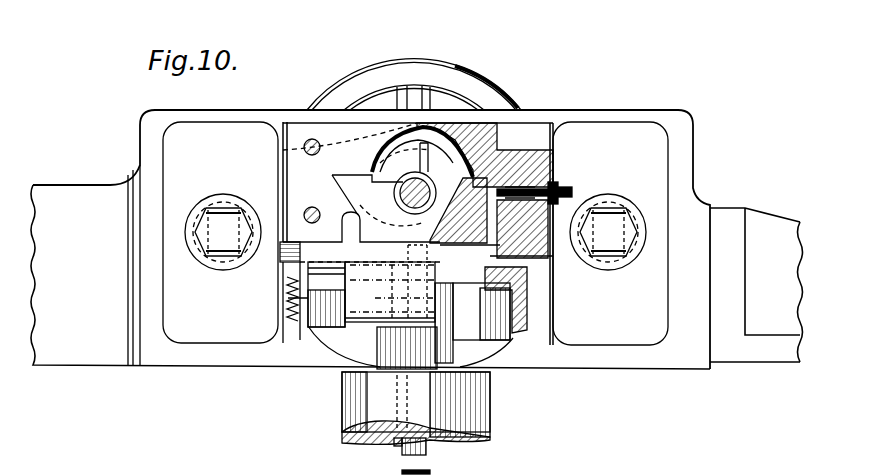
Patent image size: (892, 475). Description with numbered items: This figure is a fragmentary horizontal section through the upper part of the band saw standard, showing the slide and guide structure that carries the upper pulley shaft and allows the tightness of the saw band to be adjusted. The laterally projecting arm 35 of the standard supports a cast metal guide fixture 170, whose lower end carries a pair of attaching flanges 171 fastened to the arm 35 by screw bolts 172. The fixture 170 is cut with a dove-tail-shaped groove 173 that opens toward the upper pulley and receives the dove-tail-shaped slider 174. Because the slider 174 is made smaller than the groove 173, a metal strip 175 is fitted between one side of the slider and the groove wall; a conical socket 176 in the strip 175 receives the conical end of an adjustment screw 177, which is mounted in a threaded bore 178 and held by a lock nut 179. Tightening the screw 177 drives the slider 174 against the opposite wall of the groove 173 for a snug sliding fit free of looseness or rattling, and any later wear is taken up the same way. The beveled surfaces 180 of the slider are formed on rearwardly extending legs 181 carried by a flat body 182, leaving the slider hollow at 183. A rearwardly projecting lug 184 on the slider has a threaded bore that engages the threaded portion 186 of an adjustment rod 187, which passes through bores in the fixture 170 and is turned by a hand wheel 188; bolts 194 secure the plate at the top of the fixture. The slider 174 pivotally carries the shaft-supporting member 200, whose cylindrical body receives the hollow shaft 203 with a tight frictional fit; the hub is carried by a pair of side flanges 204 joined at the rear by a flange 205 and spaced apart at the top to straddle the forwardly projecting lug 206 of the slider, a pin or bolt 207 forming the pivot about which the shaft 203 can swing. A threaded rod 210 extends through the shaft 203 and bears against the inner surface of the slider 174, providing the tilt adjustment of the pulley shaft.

The laterally projecting arm 35 is at (172, 368).
The guide fixture 170 is at (298, 122).
The attaching flanges 171 is at (208, 305).
The screw bolts 172 is at (222, 214).
The dove-tail-shaped groove 173 is at (522, 160).
The dove-tail-shaped slider 174 is at (540, 288).
The metal strip 175 is at (503, 146).
The conical socket 176 is at (512, 186).
The adjustment screw 177 is at (556, 186).
The threaded bore 178 is at (480, 230).
The lock nut 179 is at (570, 187).
The beveled surfaces 180 is at (338, 195).
The rearwardly extending legs 181 is at (483, 150).
The flat body 182 is at (477, 217).
The hollow 183 is at (466, 143).
The rearwardly projecting lug 184 is at (418, 163).
The threaded portion 186 is at (372, 175).
The adjustment rod 187 is at (402, 208).
The hand wheel 188 is at (338, 86).
The bolts 194 is at (304, 215).
The shaft-supporting member 200 is at (345, 336).
The hollow shaft 203 is at (395, 444).
The side flanges 204 is at (300, 347).
The flange 205 is at (480, 292).
The forwardly projecting lug 206 is at (355, 343).
The pin or bolt 207 is at (290, 292).
The threaded rod 210 is at (428, 451).